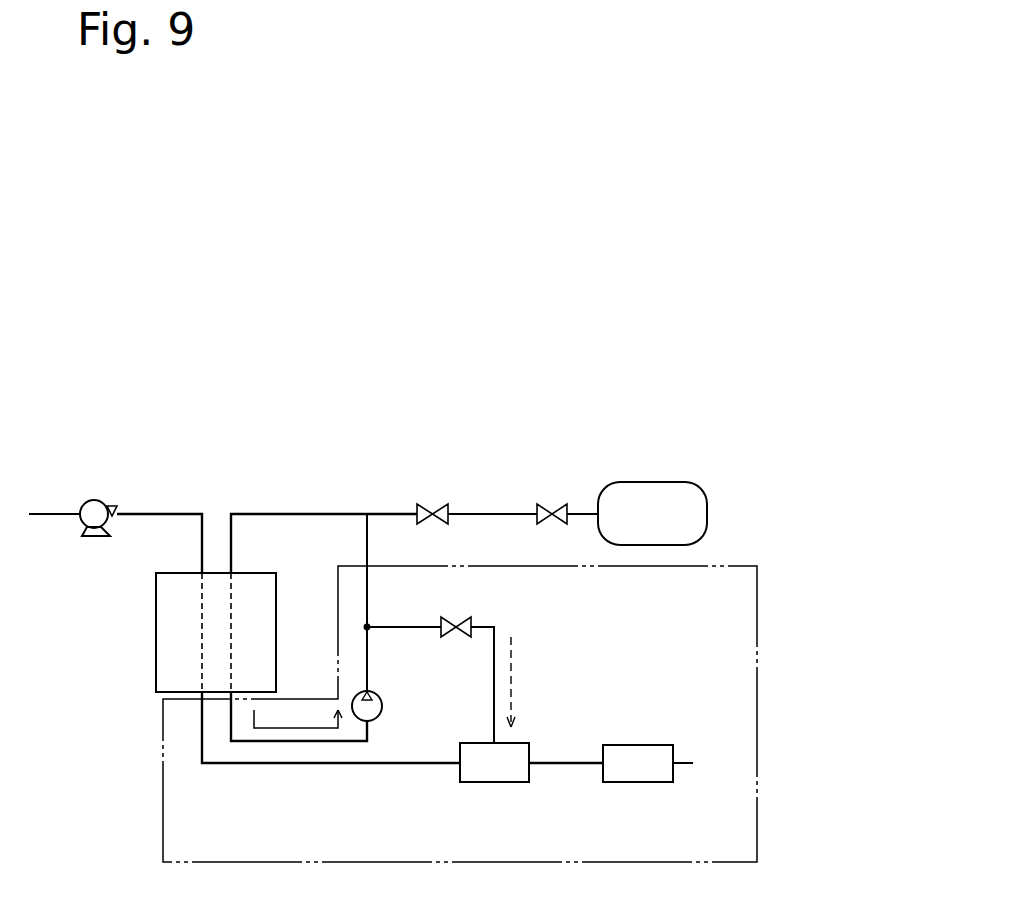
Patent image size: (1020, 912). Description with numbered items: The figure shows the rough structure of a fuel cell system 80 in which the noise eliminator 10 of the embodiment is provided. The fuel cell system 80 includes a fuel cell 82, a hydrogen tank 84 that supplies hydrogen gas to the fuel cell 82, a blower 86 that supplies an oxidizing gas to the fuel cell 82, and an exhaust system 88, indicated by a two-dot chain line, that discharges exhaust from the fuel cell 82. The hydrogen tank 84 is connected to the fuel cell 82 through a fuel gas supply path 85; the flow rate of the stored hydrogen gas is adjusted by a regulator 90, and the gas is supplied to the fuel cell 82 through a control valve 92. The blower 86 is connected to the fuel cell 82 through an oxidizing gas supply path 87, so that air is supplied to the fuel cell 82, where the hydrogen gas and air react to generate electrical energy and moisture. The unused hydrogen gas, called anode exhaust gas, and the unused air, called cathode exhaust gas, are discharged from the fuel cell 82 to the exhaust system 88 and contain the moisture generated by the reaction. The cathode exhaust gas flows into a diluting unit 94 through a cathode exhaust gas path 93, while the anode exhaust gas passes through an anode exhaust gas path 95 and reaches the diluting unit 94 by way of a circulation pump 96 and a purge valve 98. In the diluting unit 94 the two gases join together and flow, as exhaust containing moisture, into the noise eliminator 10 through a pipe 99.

The fuel cell system 80 is at (510, 388).
The fuel cell 82 is at (277, 631).
The hydrogen tank 84 is at (647, 482).
The fuel gas supply path 85 is at (292, 514).
The blower 86 is at (98, 500).
The oxidizing gas supply path 87 is at (163, 514).
The exhaust system 88 is at (757, 608).
The regulator 90 is at (547, 508).
The control valve 92 is at (427, 508).
The cathode exhaust gas path 93 is at (266, 765).
The diluting unit 94 is at (496, 783).
The anode exhaust gas path 95 is at (369, 655).
The circulation pump 96 is at (383, 708).
The purge valve 98 is at (463, 617).
The pipe 99 is at (570, 765).
The noise eliminator 10 is at (640, 783).